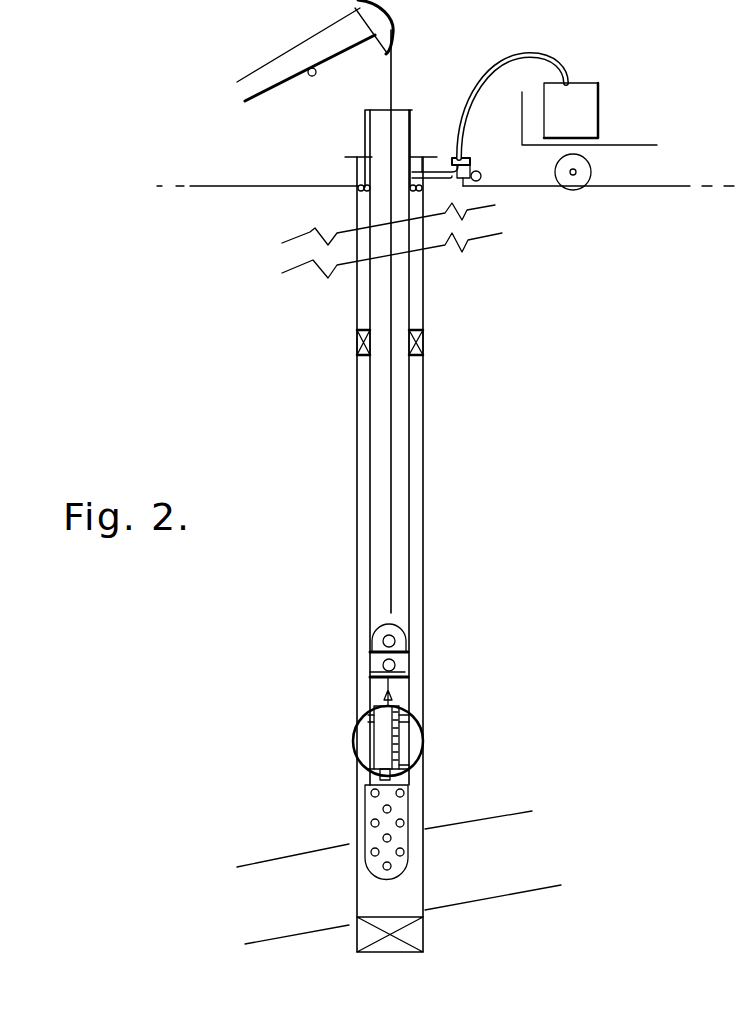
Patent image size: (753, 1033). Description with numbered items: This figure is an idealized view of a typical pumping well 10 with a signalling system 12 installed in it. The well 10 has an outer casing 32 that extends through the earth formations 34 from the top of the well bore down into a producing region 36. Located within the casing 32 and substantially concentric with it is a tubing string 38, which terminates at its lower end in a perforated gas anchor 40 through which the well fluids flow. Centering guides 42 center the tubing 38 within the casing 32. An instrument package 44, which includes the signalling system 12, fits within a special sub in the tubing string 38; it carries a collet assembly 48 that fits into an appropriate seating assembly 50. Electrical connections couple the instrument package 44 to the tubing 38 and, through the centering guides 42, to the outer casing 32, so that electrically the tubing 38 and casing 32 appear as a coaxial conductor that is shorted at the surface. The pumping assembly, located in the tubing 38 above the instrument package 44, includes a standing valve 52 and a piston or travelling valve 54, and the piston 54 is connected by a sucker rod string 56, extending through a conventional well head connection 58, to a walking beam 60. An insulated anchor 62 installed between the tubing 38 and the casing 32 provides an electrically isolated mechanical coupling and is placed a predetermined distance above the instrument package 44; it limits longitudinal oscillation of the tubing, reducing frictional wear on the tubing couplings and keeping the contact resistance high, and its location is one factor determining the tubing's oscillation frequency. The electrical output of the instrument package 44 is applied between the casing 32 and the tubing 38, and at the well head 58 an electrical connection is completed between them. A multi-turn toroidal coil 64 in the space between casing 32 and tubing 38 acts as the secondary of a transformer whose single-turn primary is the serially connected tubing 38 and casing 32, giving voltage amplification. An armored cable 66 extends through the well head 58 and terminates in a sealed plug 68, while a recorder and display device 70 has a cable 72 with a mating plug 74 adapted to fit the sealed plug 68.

The well 10 is at (332, 450).
The signalling system 12 is at (374, 741).
The outer casing 32 is at (355, 616).
The earth formations 34 is at (278, 823).
The producing region 36 is at (297, 903).
The tubing string 38 is at (411, 495).
The perforated gas anchor 40 is at (403, 815).
The centering guides 42 is at (354, 717).
The instrument package 44 is at (400, 729).
The collet assembly 48 is at (403, 770).
The seating assembly 50 is at (373, 780).
The standing valve 52 is at (402, 672).
The travelling valve 54 is at (371, 633).
The sucker rod string 56 is at (389, 545).
The well head connection 58 is at (358, 155).
The walking beam 60 is at (291, 82).
The insulated anchor 62 is at (357, 345).
The toroidal coil 64 is at (357, 193).
The armored cable 66 is at (464, 180).
The sealed plug 68 is at (469, 160).
The recorder and display device 70 is at (592, 92).
The cable 72 is at (532, 55).
The mating plug 74 is at (452, 157).